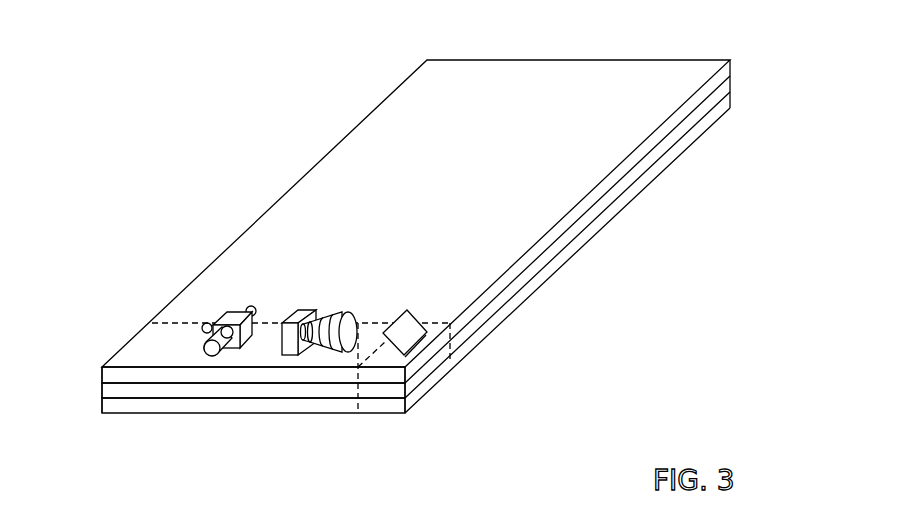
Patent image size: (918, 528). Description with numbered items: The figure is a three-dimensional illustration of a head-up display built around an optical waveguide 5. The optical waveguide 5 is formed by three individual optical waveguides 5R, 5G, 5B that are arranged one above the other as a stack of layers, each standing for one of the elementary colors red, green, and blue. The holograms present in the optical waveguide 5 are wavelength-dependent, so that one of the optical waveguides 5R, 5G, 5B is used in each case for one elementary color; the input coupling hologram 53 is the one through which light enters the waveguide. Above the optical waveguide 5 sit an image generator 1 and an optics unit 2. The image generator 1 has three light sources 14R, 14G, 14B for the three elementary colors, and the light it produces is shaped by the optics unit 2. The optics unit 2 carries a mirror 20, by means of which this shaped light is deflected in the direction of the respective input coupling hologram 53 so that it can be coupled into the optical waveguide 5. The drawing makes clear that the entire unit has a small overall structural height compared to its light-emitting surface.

The image generator 1 is at (230, 305).
The optics unit 2 is at (318, 310).
The optical waveguide 5 is at (370, 267).
The optical waveguide for red 5R is at (108, 375).
The optical waveguide for green 5G is at (108, 392).
The optical waveguide for blue 5B is at (112, 410).
The light source for red 14R is at (254, 316).
The light source for green 14G is at (211, 356).
The light source for blue 14B is at (203, 323).
The mirror 20 is at (417, 320).
The input coupling hologram 53 is at (398, 358).